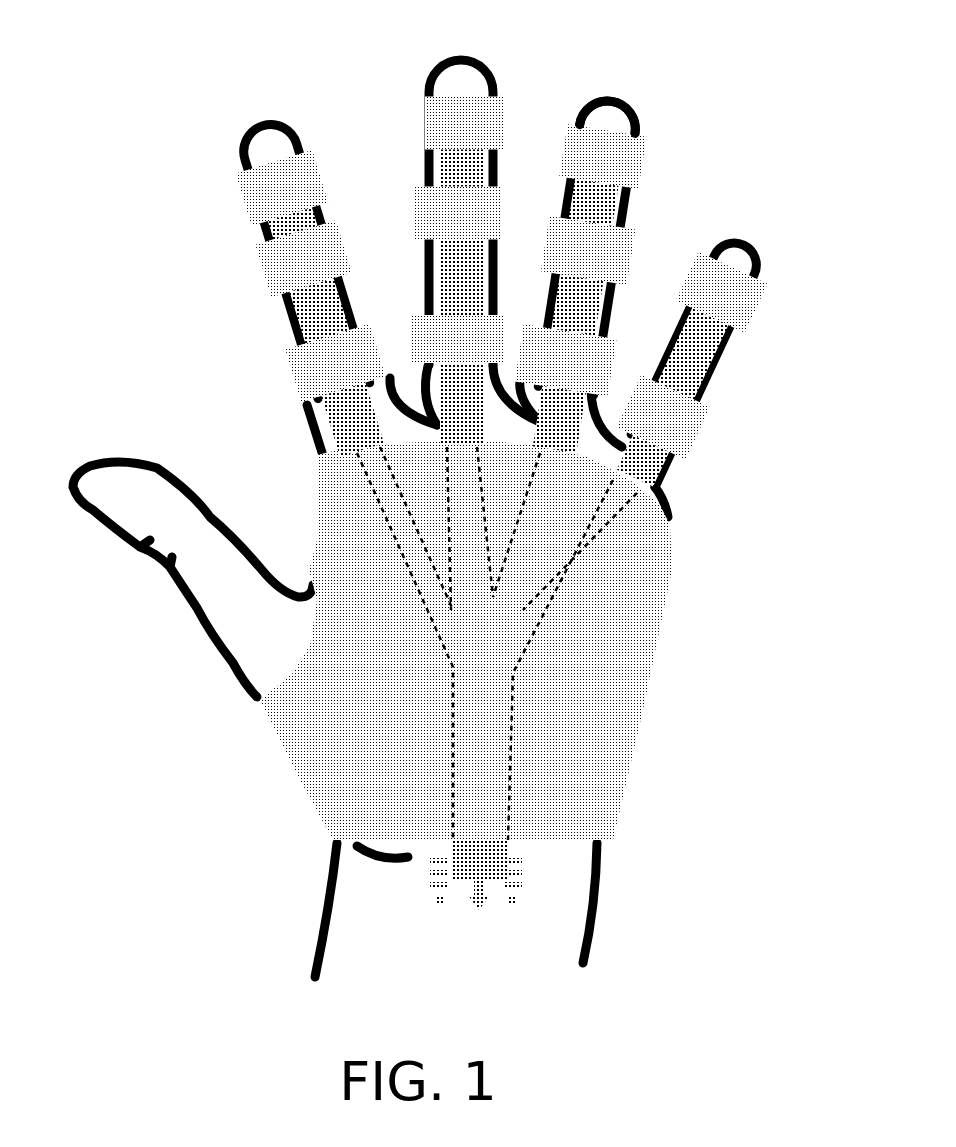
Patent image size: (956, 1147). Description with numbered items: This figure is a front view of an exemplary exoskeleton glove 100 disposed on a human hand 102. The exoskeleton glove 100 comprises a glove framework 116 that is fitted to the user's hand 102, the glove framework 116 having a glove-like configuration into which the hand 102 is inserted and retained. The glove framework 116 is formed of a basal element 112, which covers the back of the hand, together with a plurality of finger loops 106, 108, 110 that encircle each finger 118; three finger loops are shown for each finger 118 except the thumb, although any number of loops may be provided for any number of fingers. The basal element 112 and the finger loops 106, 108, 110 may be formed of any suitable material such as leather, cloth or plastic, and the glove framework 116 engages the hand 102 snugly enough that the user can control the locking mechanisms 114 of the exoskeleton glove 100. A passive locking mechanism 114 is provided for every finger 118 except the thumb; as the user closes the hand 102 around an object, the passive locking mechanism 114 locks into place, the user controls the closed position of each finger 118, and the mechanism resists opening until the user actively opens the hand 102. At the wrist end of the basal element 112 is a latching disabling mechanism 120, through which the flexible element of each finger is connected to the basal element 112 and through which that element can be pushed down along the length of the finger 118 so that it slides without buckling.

The exoskeleton glove 100 is at (430, 525).
The hand 102 is at (193, 632).
The finger loop 106 is at (318, 371).
The finger loop 108 is at (272, 273).
The finger loop 110 is at (204, 188).
The basal element 112 is at (600, 667).
The passive locking mechanism 114 is at (310, 218).
The glove framework 116 is at (445, 450).
The finger 118 is at (623, 110).
The latching disabling mechanism 120 is at (493, 793).